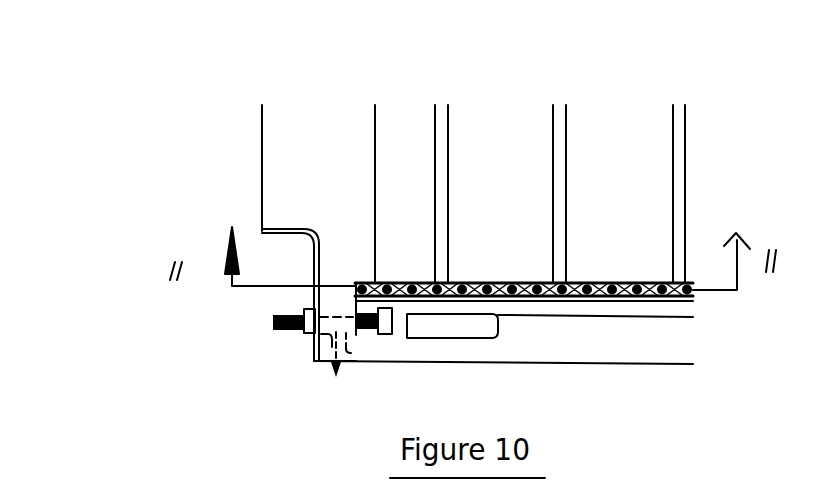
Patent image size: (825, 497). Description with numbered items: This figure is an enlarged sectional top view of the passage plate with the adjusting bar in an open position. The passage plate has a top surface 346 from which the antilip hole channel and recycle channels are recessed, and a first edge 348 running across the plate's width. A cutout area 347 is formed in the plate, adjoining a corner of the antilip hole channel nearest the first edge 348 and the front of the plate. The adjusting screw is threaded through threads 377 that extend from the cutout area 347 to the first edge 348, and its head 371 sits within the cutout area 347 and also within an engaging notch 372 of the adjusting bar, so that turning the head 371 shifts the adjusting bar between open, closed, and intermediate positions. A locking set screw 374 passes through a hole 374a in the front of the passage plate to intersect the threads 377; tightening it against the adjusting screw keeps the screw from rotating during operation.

The top surface 346 is at (367, 282).
The first edge 348 is at (316, 302).
The threads 377 is at (317, 350).
The head 371 is at (385, 340).
The engaging notch 372 is at (384, 306).
The cutout area 347 is at (480, 328).
The locking set screw 374 is at (338, 378).
The hole 374a is at (352, 365).